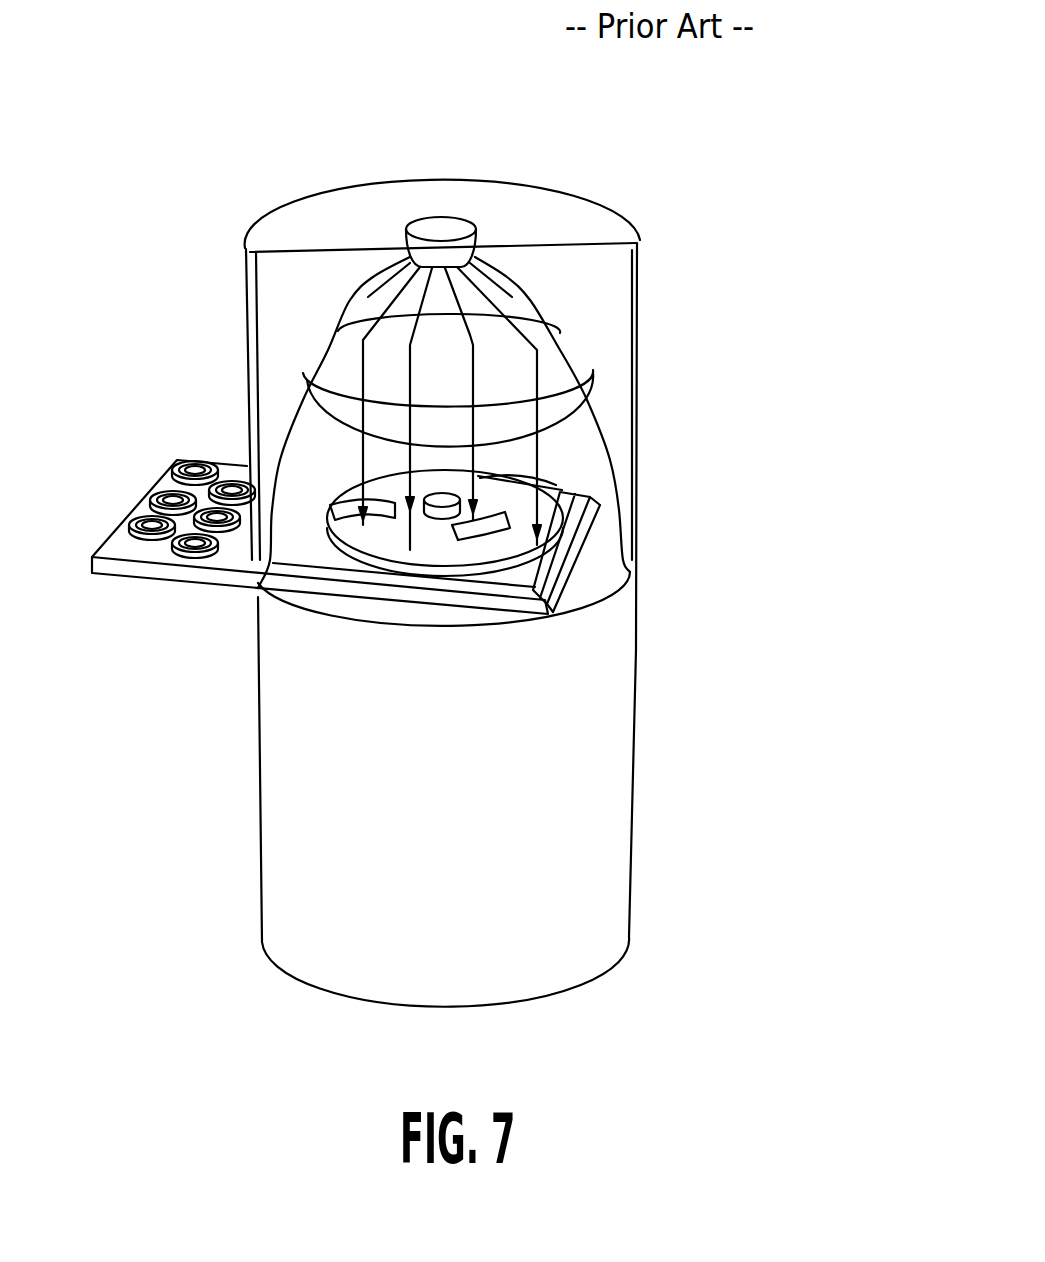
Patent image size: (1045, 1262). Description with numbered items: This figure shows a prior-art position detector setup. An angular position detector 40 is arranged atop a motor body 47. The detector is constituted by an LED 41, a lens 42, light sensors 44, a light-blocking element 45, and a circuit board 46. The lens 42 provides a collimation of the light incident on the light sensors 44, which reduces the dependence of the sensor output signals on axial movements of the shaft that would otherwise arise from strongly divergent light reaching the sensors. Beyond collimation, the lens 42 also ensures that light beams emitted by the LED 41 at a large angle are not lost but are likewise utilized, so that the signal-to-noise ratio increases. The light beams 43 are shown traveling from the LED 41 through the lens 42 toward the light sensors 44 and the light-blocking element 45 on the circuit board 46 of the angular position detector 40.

The angular position detector 40 is at (152, 170).
The LED 41 is at (441, 234).
The lens 42 is at (556, 360).
The deposition beams 43 is at (363, 450).
The light sensors 44 is at (487, 558).
The light-blocking element 45 is at (431, 526).
The circuit board 46 is at (410, 460).
The motor body 47 is at (598, 747).